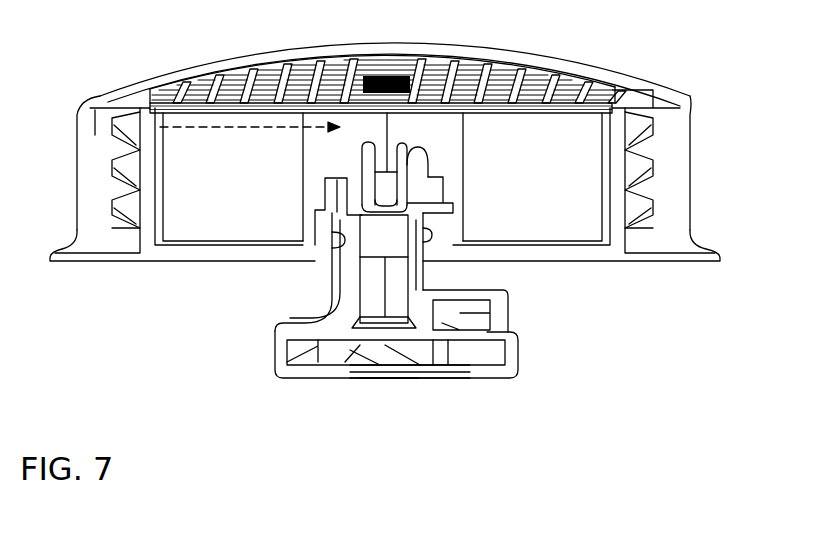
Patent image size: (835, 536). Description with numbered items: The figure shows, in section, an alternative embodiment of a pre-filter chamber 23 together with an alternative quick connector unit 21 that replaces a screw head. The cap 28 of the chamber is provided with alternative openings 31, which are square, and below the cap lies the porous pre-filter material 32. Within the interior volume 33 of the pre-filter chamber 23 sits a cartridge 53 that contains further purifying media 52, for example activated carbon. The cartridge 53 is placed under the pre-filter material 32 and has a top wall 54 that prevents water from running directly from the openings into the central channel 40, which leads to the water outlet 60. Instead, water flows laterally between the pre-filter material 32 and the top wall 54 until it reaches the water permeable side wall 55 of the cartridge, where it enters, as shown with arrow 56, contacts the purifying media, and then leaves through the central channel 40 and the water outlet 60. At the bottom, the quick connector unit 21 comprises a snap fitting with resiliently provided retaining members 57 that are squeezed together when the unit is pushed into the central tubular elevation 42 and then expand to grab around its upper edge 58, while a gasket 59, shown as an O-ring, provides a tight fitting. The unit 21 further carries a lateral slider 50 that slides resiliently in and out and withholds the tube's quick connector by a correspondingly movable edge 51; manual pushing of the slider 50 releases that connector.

The quick connector unit 21 is at (275, 350).
The pre-filter chamber 23 is at (707, 145).
The cap 28 is at (623, 75).
The openings 31 is at (553, 80).
The porous pre-filter material 32 is at (163, 108).
The interior volume 33 is at (603, 115).
The central channel 40 is at (390, 237).
The central tubular elevation 42 is at (325, 213).
The lateral slider 50 is at (500, 348).
The movable edge 51 is at (370, 350).
The further purifying media 52 is at (548, 172).
The cartridge 53 is at (575, 227).
The top wall 54 is at (430, 117).
The water permeable side wall 55 is at (597, 153).
The arrow 56 is at (228, 127).
The snap fitting / resilient retaining members 57 is at (357, 152).
The upper edge 58 is at (337, 176).
The gasket 59 is at (342, 238).
The water outlet 60 is at (387, 383).